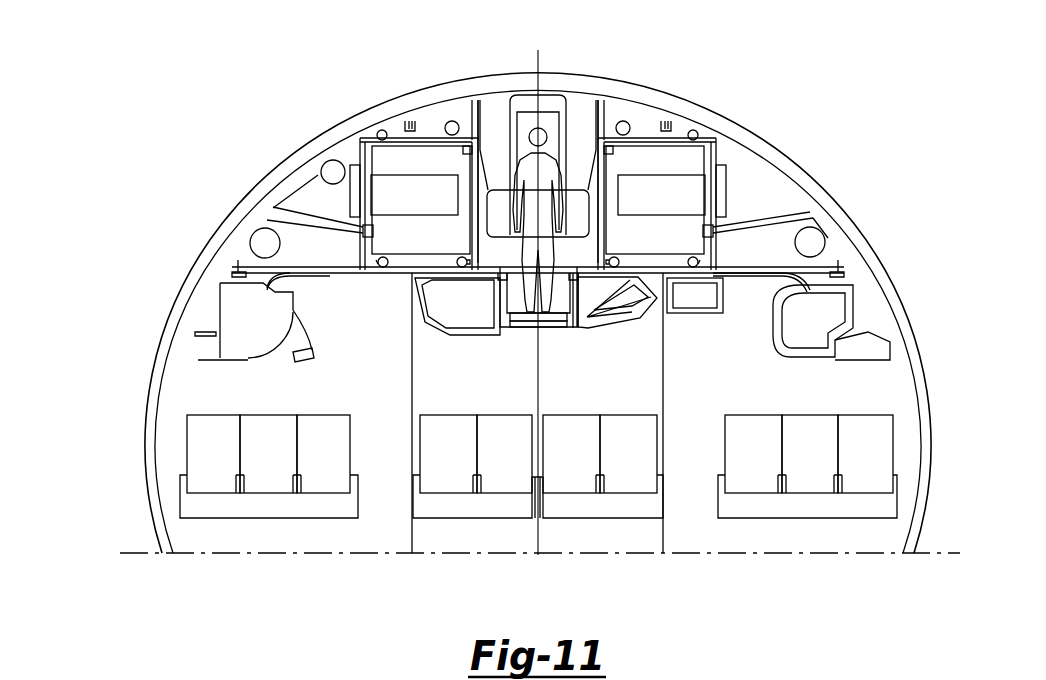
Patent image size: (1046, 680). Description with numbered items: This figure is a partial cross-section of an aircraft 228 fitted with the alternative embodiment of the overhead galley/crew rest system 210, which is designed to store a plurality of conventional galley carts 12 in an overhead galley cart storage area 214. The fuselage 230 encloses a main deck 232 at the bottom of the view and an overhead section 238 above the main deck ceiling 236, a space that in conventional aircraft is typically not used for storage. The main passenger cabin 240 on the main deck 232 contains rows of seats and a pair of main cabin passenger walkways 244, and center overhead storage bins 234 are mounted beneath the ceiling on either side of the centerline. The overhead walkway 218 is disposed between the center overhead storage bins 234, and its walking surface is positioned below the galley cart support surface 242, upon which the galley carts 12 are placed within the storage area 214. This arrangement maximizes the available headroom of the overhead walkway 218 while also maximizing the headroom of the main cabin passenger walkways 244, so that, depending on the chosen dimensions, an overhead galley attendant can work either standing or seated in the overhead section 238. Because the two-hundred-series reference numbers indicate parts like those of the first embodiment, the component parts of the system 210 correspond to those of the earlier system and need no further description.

The galley cart 12 is at (683, 152).
The overhead galley/crew rest system 210 is at (758, 122).
The ceiling 214 is at (641, 118).
The overhead walkway 218 is at (560, 303).
The aircraft 228 is at (348, 126).
The fuselage 230 is at (203, 270).
The main deck 232 is at (700, 553).
The center overhead storage bin 234 is at (453, 317).
The main deck ceiling 236 is at (330, 277).
The overhead section 238 is at (750, 198).
The main passenger cabin 240 is at (818, 397).
The galley cart support surface 242 is at (423, 258).
The main cabin passenger walkway 244 is at (375, 553).